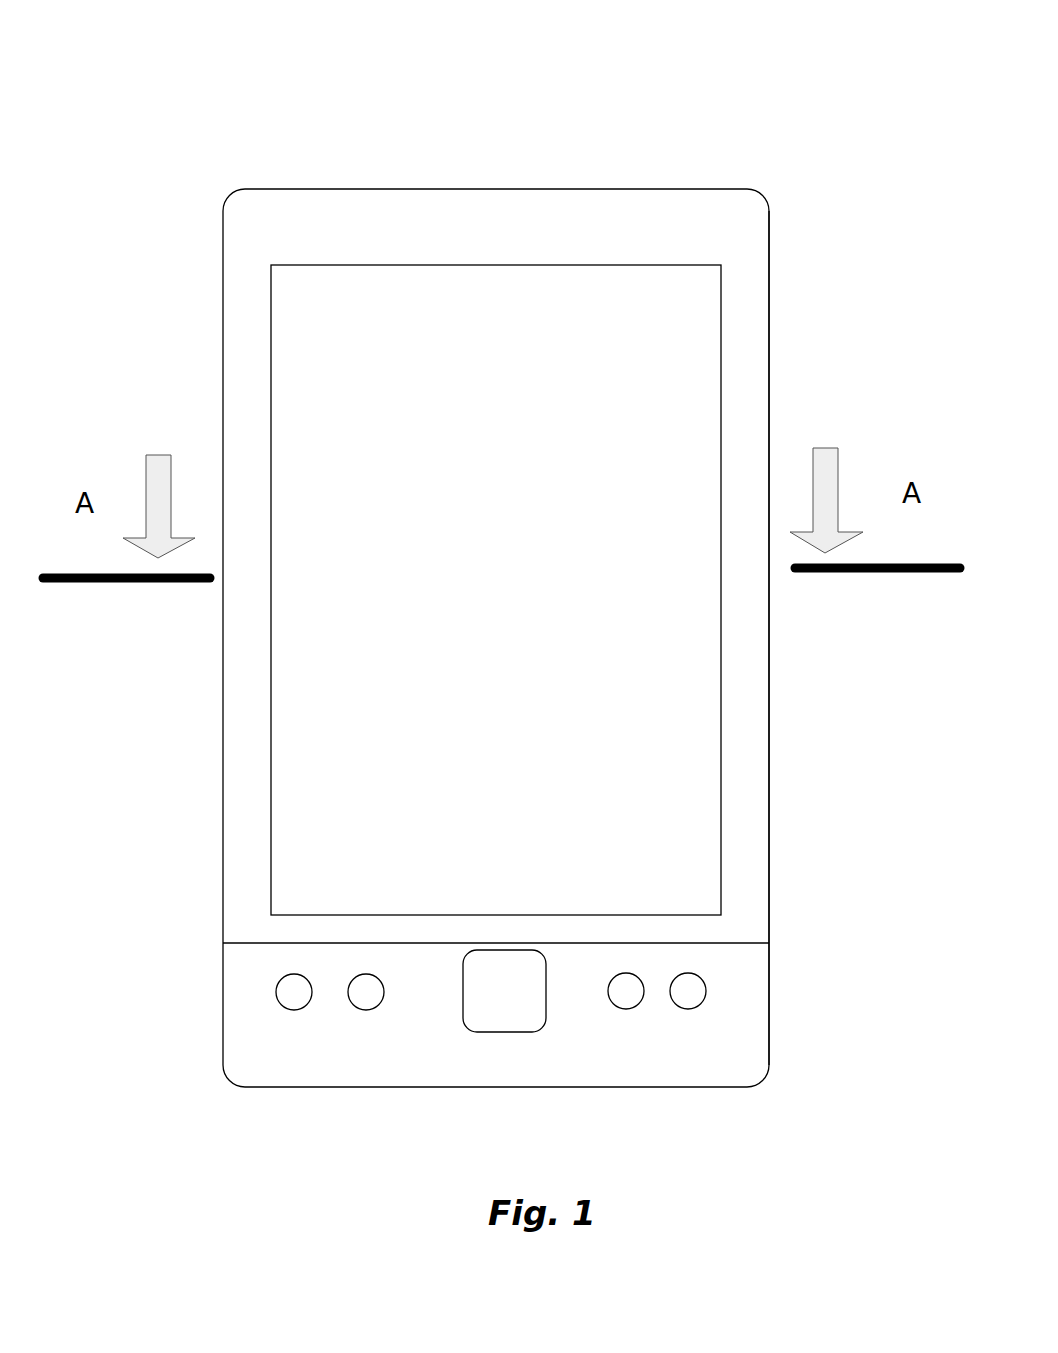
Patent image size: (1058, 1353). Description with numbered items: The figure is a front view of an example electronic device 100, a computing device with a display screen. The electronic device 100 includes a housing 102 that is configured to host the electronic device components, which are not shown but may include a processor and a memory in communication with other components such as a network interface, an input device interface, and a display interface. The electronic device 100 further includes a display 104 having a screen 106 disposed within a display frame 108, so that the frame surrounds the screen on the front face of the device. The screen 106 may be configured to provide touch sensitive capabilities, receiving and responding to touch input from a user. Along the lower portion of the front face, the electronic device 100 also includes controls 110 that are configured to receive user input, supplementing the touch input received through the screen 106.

The electronic device 100 is at (747, 52).
The housing 102 is at (768, 977).
The display 104 is at (493, 183).
The screen 106 is at (688, 367).
The display frame 108 is at (743, 687).
The controls 110 is at (543, 1035).